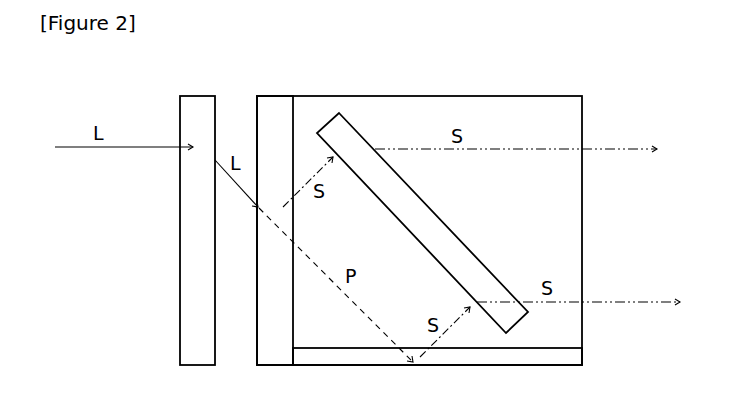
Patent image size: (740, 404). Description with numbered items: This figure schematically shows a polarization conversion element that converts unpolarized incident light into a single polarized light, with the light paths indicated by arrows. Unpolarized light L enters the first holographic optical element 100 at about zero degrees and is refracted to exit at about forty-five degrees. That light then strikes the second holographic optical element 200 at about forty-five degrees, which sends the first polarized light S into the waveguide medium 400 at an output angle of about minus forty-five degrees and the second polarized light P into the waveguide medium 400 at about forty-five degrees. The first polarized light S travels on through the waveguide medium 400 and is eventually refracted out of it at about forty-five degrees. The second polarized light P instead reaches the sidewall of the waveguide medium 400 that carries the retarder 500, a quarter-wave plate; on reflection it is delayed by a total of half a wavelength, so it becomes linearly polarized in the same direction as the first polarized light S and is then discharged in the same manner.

The first holographic optical element 100 is at (200, 95).
The second holographic optical element 200 is at (277, 95).
The waveguide medium 400 is at (420, 95).
The retarder 500 is at (583, 359).